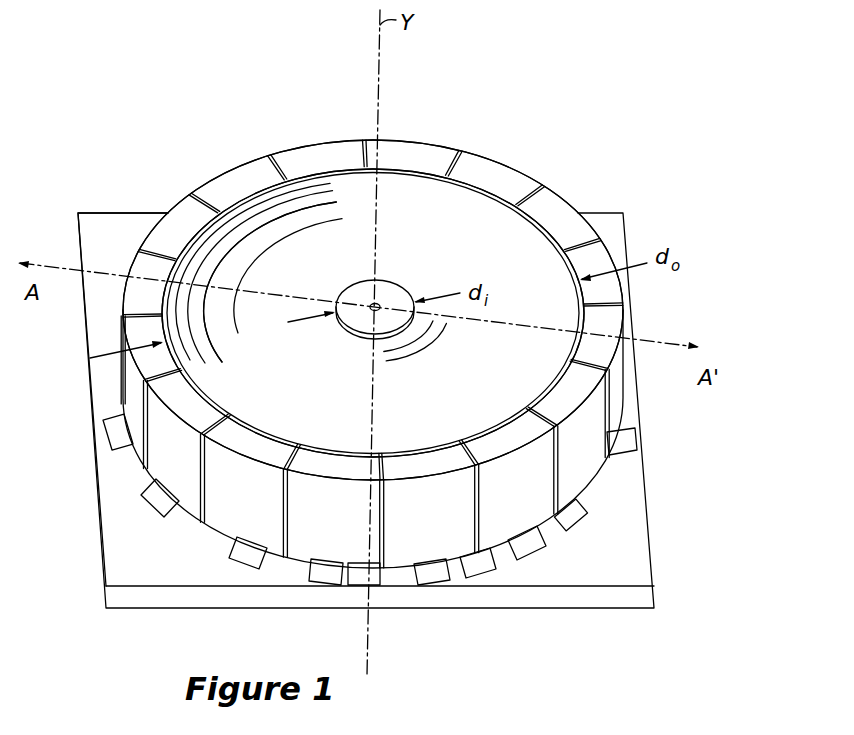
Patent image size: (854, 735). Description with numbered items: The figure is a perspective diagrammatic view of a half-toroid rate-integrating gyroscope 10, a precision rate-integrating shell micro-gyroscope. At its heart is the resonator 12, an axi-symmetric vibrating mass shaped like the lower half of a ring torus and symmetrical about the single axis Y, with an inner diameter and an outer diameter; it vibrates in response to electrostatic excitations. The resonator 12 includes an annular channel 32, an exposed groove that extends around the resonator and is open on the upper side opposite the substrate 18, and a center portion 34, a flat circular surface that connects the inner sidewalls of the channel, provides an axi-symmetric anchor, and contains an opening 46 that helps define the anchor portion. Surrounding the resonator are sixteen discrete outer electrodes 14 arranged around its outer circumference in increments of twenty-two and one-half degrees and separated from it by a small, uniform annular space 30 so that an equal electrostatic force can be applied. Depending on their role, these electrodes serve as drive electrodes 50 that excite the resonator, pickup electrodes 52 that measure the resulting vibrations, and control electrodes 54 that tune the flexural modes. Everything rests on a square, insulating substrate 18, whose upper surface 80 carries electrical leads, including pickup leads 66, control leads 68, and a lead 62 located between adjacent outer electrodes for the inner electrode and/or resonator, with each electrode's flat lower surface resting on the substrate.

The gyroscope 10 is at (566, 38).
The resonator 12 is at (265, 203).
The outer electrodes 14 is at (314, 140).
The substrate 18 is at (607, 574).
The annular space 30 is at (481, 192).
The annular channel 32 is at (219, 256).
The center portion 34 is at (361, 293).
The opening 46 is at (378, 312).
The drive electrodes 50 is at (428, 148).
The pickup electrodes 52 is at (208, 188).
The control electrodes 54 is at (300, 167).
The lead 62 is at (479, 563).
The pickup leads 66 is at (527, 546).
The control leads 68 is at (240, 548).
The upper surface 80 is at (118, 540).